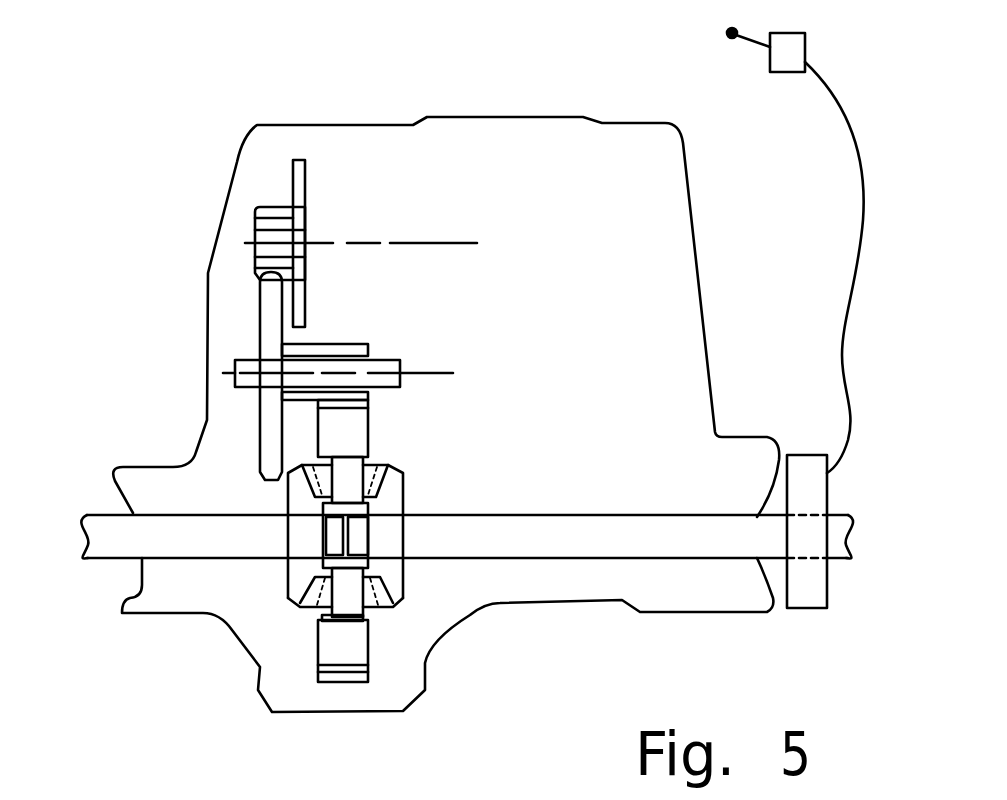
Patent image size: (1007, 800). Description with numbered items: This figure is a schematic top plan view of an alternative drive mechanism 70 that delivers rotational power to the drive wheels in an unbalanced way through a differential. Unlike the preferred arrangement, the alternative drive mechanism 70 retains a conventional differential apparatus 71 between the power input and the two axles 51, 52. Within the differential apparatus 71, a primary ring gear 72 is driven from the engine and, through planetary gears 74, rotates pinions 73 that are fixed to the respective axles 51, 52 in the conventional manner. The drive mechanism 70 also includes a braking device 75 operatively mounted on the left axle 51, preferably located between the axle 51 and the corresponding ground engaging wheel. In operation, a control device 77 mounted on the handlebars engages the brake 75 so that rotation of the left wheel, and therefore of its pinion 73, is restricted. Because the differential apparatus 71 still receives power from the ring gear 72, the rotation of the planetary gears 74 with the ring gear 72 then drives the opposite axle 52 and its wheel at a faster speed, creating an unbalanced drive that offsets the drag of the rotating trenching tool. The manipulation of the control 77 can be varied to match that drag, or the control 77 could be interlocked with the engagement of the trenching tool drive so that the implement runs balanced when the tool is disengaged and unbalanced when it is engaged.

The left axle 51 is at (708, 540).
The right axle 52 is at (87, 513).
The alternative drive mechanism 70 is at (223, 131).
The differential apparatus 71 is at (362, 547).
The primary ring gear 72 is at (350, 642).
The pinion 73 is at (403, 503).
The planetary gear 74 is at (377, 463).
The braking device 75 is at (808, 455).
The control device 77 is at (783, 72).